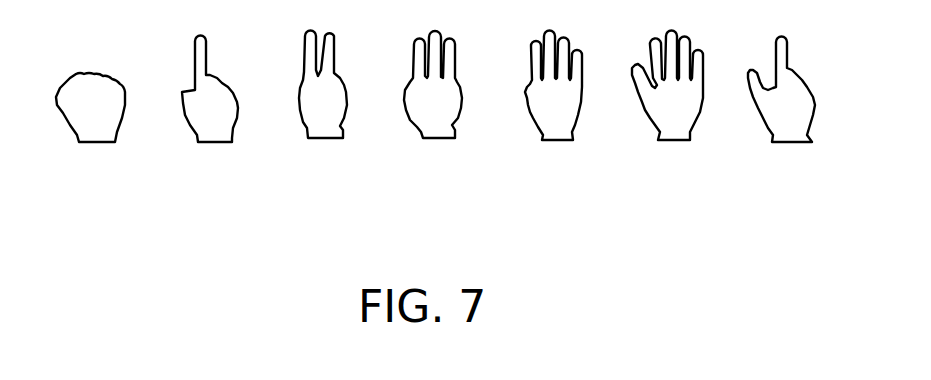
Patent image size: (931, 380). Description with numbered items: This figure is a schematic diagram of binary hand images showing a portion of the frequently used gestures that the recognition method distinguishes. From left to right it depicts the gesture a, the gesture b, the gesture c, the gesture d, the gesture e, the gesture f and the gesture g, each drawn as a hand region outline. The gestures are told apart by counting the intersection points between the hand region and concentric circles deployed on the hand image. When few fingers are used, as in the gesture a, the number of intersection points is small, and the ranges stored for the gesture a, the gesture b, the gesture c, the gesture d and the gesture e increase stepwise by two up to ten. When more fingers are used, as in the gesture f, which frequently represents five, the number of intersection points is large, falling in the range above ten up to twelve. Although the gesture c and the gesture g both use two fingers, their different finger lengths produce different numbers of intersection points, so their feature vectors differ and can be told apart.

The gesture a is at (90, 136).
The gesture b is at (210, 118).
The gesture c is at (323, 116).
The gesture d is at (433, 115).
The gesture e is at (553, 116).
The gesture f is at (667, 116).
The gesture g is at (781, 119).